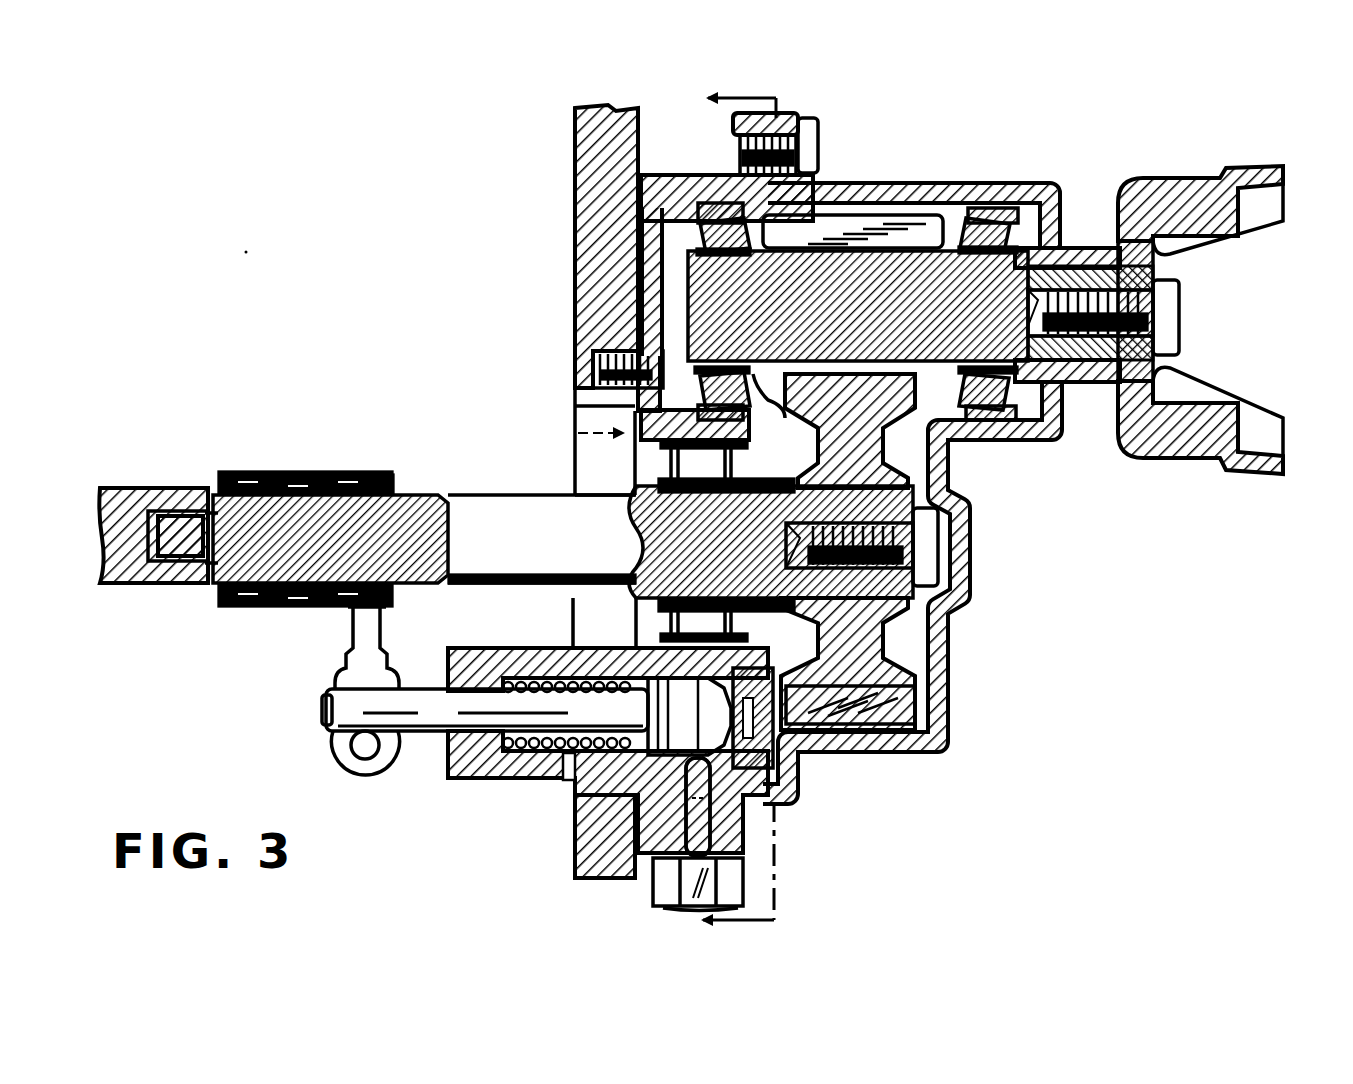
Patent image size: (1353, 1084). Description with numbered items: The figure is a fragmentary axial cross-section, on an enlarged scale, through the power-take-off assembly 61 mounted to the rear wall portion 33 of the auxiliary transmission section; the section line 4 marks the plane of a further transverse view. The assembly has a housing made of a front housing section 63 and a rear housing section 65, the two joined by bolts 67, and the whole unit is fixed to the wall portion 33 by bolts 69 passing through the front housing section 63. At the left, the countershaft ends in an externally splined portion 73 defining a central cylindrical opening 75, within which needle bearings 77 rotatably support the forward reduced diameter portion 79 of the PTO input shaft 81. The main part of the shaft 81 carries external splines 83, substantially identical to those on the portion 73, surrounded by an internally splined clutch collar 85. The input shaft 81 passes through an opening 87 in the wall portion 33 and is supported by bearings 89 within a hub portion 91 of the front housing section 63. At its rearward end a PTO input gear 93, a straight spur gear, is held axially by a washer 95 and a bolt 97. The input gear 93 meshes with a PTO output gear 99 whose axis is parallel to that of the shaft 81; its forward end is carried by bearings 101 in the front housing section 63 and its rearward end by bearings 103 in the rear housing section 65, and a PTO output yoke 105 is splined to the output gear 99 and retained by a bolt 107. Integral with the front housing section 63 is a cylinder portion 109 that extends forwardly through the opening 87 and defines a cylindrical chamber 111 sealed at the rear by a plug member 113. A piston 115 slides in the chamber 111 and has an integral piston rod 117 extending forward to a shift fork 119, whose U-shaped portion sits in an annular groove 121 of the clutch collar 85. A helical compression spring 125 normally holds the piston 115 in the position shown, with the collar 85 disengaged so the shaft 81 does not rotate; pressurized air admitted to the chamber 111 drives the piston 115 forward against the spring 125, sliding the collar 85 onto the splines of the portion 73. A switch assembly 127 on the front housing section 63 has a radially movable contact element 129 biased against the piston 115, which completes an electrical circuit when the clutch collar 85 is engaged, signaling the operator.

The section line 4- 4 is at (751, 514).
The rear wall portion 33 is at (582, 172).
The power-take-off assembly 61 is at (995, 650).
The front housing section 63 is at (690, 178).
The rear housing section 65 is at (972, 192).
The bolt 67 is at (812, 148).
The bolt 69 is at (683, 347).
The externally splined portion 73 is at (96, 488).
The central cylindrical opening 75 is at (178, 520).
The needle bearings 77 is at (182, 520).
The forward reduced diameter portion 79 is at (172, 540).
The PTO input shaft 81 is at (522, 493).
The external splines 83 is at (310, 582).
The clutch collar 85 is at (250, 466).
The opening 87 is at (538, 432).
The bearings 89 is at (771, 541).
The hub portion 91 is at (748, 430).
The PTO input gear 93 is at (882, 698).
The washer 95 is at (944, 608).
The bolt 97 is at (930, 545).
The PTO output gear 99 is at (896, 306).
The bearings 101 is at (742, 246).
The bearings 103 is at (980, 250).
The PTO output yoke 105 is at (1222, 458).
The bolt 107 is at (1175, 305).
The cylinder portion 109 is at (462, 762).
The cylindrical chamber 111 is at (600, 668).
The plug member 113 is at (780, 750).
The piston 115 is at (648, 706).
The piston rod 117 is at (420, 700).
The shift fork 119 is at (345, 626).
The annular groove 121 is at (372, 465).
The helical compression spring 125 is at (498, 668).
The switch assembly 127 is at (640, 880).
The contact element 129 is at (700, 778).